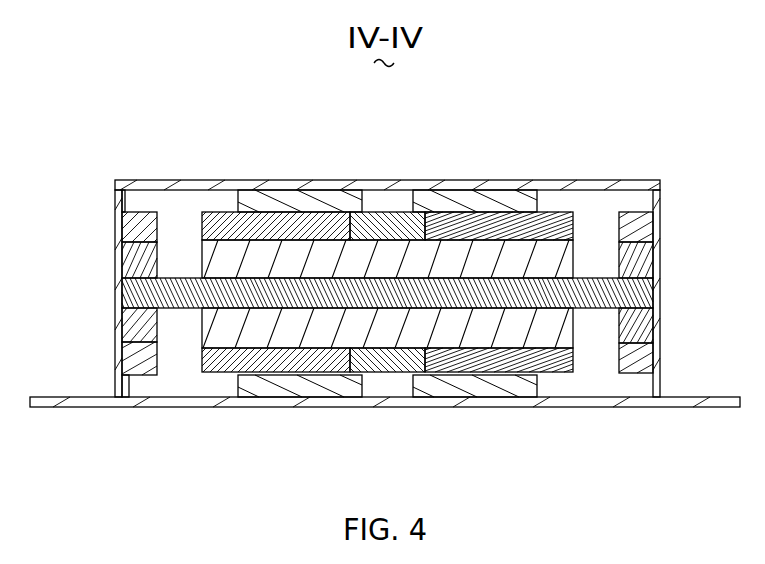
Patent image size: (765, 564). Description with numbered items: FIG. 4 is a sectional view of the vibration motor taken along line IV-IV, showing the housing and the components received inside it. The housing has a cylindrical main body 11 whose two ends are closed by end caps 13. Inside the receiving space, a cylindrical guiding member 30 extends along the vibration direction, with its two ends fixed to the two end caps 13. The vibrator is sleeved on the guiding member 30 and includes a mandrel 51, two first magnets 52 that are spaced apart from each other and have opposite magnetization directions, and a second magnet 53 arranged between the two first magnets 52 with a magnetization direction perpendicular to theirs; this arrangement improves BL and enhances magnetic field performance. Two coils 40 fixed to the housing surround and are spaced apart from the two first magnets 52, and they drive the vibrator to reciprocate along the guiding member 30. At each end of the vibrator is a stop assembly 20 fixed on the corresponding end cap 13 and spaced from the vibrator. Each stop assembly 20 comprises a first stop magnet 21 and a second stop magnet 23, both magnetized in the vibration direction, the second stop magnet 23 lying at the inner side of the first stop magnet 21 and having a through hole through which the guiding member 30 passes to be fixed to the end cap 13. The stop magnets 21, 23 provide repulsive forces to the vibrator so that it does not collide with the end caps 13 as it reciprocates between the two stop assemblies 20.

The main body 11 is at (628, 187).
The end cap 13 is at (658, 333).
The stop assembly 20 is at (438, 290).
The first stop magnet 21 is at (655, 220).
The second stop magnet 23 is at (655, 250).
The guiding member 30 is at (147, 297).
The coil 40 is at (278, 190).
The mandrel 51 is at (537, 260).
The first magnet 52 is at (227, 373).
The second magnet 53 is at (376, 367).